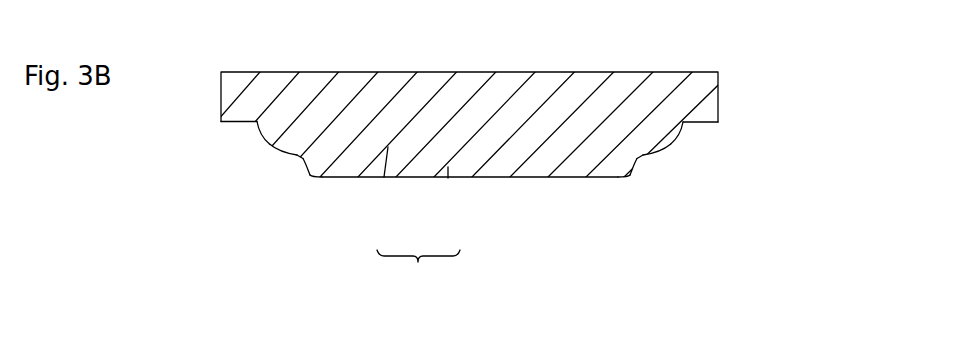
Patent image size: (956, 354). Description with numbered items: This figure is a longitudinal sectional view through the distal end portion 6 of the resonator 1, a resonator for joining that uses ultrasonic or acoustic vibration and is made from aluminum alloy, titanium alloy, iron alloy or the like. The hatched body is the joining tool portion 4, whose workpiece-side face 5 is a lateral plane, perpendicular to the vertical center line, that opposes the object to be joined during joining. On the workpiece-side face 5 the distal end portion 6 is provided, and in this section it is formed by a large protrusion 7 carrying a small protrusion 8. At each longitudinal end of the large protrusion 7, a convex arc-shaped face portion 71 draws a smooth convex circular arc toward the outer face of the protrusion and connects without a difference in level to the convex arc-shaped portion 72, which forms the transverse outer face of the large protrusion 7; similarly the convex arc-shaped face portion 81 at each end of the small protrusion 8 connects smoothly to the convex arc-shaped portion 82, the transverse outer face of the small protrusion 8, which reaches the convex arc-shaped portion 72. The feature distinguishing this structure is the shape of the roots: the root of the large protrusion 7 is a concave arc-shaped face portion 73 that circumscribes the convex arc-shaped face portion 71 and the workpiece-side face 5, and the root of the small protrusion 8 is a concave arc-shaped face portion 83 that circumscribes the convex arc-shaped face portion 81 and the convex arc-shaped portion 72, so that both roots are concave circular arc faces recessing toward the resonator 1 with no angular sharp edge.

The resonator 1 is at (452, 97).
The joining tool portion 4 is at (636, 70).
The workpiece-side face 5 is at (232, 123).
The distal end portion 6 is at (418, 279).
The large protrusion 7 is at (384, 177).
The small protrusion 8 is at (448, 178).
The convex arc-shaped face portion 71 is at (270, 148).
The convex arc-shaped portion 72 is at (288, 156).
The concave arc-shaped face portion 73 is at (257, 123).
The convex arc-shaped face portion 81 is at (304, 161).
The convex arc-shaped portion 82 is at (542, 178).
The concave arc-shaped face portion 83 is at (299, 158).